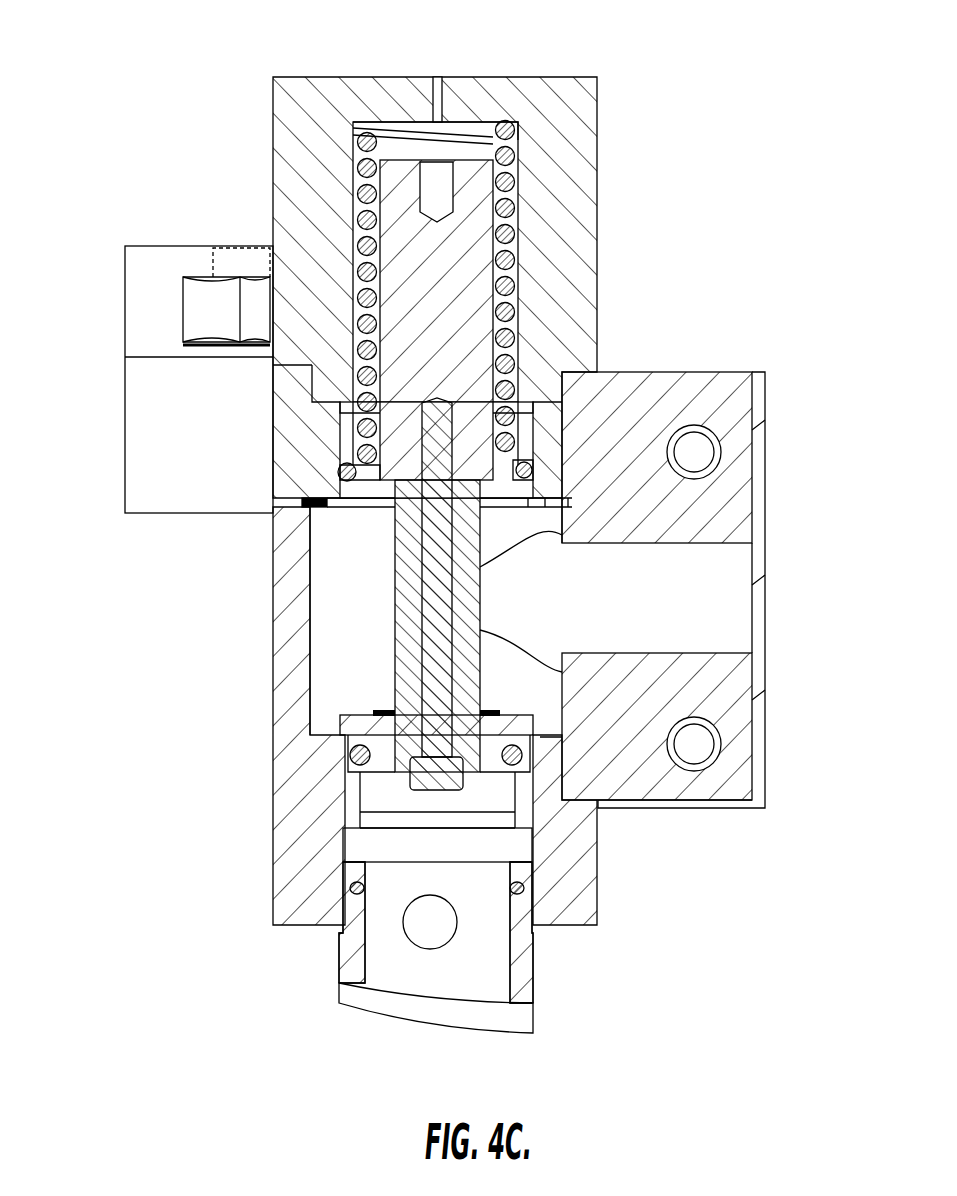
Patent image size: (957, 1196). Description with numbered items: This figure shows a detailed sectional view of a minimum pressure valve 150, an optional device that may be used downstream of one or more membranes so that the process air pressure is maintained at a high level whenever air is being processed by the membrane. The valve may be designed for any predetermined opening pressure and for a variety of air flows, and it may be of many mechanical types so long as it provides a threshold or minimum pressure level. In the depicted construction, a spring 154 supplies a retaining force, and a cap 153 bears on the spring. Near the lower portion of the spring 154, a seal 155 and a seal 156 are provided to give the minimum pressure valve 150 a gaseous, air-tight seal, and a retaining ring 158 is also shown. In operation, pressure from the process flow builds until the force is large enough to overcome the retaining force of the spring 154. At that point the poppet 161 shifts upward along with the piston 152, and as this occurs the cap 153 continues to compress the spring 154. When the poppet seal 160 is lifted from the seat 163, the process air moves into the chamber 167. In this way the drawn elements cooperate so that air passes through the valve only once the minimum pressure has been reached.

The minimum pressure valve 150 is at (163, 88).
The piston 152 is at (393, 160).
The cap 153 is at (515, 77).
The spring 154 is at (513, 178).
The seal 155 is at (565, 383).
The seal 156 is at (335, 460).
The retaining ring 158 is at (373, 711).
The poppet seal 160 is at (345, 753).
The poppet 161 is at (380, 773).
The seat 163 is at (548, 752).
The chamber 167 is at (707, 600).